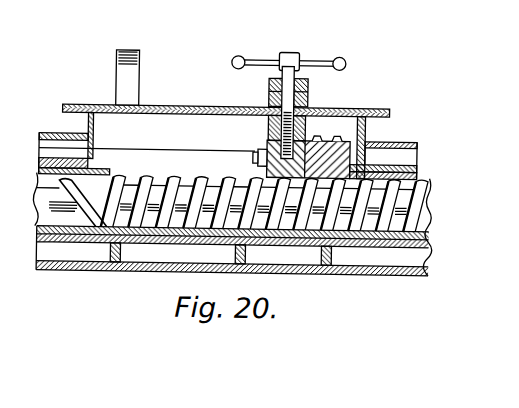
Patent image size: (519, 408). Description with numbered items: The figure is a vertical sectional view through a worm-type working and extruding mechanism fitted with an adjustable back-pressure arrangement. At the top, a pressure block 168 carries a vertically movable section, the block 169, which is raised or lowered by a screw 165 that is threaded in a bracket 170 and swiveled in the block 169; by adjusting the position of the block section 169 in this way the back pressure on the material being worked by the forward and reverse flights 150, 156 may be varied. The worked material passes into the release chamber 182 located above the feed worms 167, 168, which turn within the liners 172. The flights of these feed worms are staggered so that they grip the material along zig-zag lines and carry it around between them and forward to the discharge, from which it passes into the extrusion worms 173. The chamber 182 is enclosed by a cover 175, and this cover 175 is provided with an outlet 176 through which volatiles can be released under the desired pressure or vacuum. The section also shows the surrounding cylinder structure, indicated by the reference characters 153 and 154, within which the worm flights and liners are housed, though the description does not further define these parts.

The forward and reverse flight 150 is at (428, 202).
The cylinder wall 153 is at (97, 240).
The outer jacket 154 is at (407, 262).
The forward and reverse flight 156 is at (312, 228).
The screw 165 is at (267, 102).
The feed worm 167 is at (142, 194).
The pressure block 168 is at (347, 149).
The block 169 is at (270, 167).
The bracket 170 is at (304, 127).
The liner 172 is at (56, 142).
The extrusion worm 173 is at (37, 223).
The cover 175 is at (336, 107).
The outlet 176 is at (130, 79).
The release chamber 182 is at (269, 154).